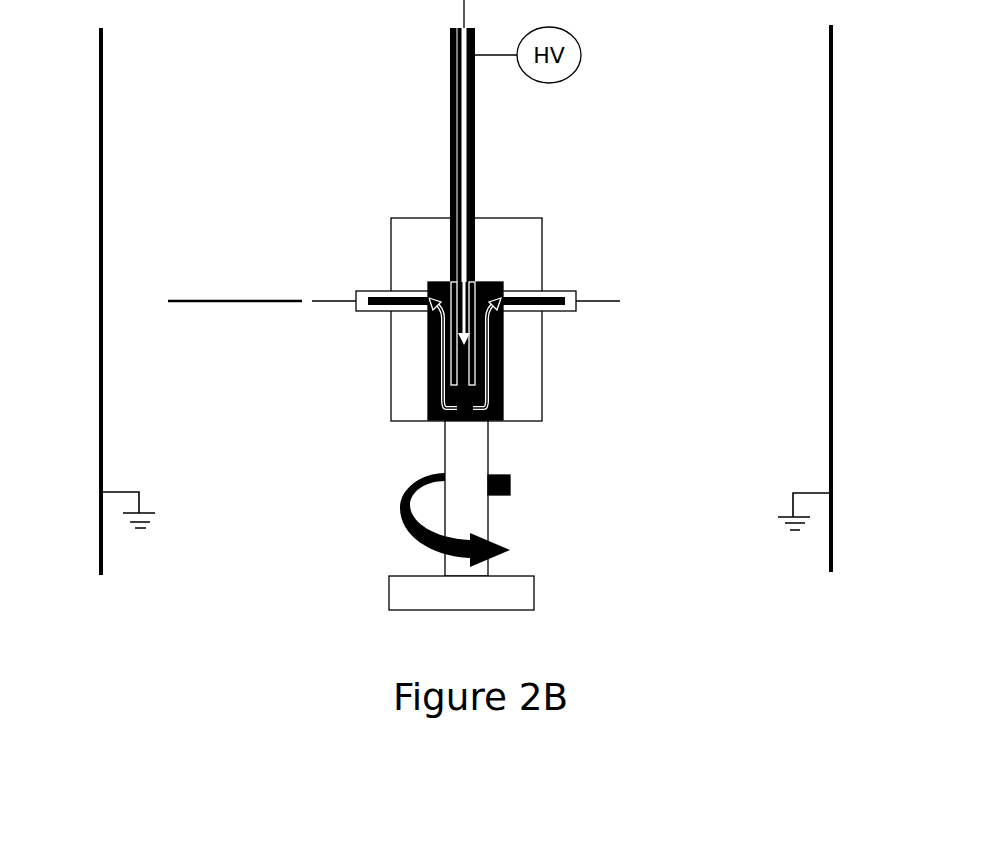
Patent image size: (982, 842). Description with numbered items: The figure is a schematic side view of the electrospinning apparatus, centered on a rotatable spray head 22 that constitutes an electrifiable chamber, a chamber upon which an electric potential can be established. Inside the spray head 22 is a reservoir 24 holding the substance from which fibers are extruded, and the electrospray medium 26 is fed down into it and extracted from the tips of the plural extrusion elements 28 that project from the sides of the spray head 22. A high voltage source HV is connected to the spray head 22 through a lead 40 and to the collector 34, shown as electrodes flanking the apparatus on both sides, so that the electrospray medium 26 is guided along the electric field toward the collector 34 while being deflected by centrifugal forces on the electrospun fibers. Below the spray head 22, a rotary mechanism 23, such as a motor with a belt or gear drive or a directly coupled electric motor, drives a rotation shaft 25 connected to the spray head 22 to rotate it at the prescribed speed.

The rotatable spray head 22 is at (663, 102).
The rotary mechanism 23 is at (510, 587).
The reservoir 24 is at (432, 367).
The rotation shaft 25 is at (477, 455).
The electrospray medium 26 is at (465, 147).
The extrusion elements 28 is at (553, 288).
The collector 34 is at (88, 260).
The lead 40 is at (464, 20).